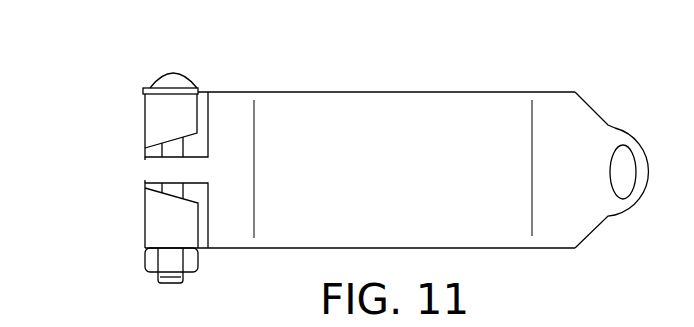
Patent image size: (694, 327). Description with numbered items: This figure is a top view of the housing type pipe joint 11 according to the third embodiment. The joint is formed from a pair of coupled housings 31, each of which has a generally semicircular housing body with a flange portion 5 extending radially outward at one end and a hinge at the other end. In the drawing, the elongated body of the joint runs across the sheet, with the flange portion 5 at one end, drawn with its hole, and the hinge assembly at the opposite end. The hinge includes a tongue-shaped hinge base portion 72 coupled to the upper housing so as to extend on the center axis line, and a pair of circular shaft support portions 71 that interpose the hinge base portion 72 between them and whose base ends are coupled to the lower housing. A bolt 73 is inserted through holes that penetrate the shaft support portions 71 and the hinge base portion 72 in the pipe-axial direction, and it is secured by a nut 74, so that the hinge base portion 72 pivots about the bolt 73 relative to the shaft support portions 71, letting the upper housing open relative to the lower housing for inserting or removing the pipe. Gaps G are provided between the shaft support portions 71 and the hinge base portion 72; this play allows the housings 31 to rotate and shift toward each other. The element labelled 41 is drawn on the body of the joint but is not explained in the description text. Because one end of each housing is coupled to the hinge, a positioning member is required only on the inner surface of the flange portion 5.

The housing type pipe joint 11 is at (548, 76).
The housing 31 is at (280, 88).
The rod body 41 is at (380, 112).
The flange portion 5 is at (620, 132).
The shaft support portion 71 is at (152, 122).
The hinge base portion 72 is at (150, 172).
The bolt 73 is at (152, 84).
The nut 74 is at (192, 257).
The gap G is at (145, 187).